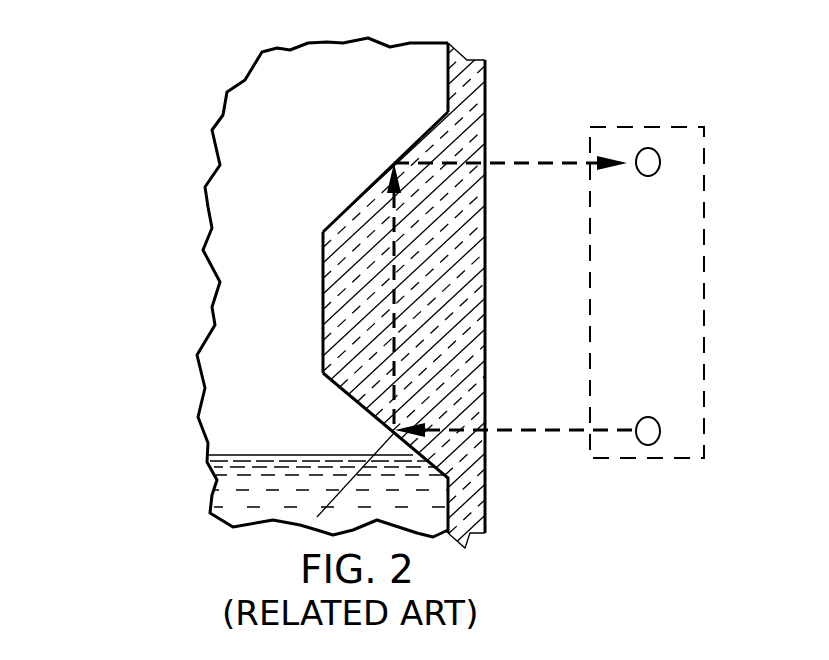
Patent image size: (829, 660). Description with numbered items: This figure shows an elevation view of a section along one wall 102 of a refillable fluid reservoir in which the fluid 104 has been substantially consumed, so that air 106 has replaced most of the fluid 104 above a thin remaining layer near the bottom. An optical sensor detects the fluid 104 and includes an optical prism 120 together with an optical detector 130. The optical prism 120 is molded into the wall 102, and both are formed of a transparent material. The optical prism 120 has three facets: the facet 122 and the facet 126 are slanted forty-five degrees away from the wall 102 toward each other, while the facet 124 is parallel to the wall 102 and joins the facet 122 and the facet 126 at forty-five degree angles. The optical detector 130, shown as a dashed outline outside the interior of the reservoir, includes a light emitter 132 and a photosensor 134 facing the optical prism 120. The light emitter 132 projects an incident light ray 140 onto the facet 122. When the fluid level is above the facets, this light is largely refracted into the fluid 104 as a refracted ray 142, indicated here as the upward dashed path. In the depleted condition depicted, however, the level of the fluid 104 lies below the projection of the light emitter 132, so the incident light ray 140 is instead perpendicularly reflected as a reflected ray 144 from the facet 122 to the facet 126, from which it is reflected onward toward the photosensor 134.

The wall 102 is at (460, 62).
The fluid 104 is at (242, 488).
The air 106 is at (244, 213).
The optical prism 120 is at (495, 311).
The facet 122 is at (340, 387).
The facet 124 is at (322, 333).
The facet 126 is at (420, 138).
The optical detector 130 is at (679, 474).
The light emitter 132 is at (648, 417).
The photosensor 134 is at (648, 148).
The incident light ray 140 is at (512, 433).
The refracted ray 142 is at (390, 247).
The reflected ray 144 is at (512, 167).